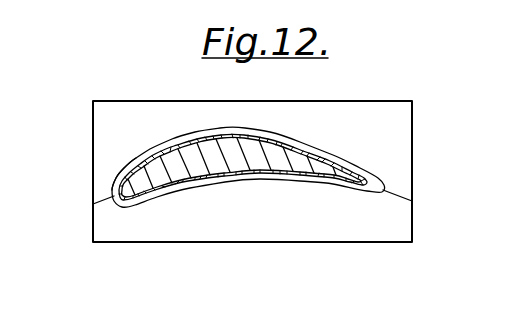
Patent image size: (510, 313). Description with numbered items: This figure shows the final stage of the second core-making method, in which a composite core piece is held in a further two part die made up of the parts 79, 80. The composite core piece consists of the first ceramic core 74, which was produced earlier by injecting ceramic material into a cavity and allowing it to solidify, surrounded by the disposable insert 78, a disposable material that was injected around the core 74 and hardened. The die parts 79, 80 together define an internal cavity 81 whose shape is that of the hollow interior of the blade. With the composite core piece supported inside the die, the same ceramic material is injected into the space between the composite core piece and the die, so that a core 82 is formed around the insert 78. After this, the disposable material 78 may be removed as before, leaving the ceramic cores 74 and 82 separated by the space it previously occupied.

The first ceramic core 74 is at (271, 158).
The disposable insert 78 is at (243, 174).
The die part 79 is at (402, 225).
The die part 80 is at (400, 151).
The internal cavity 81 is at (308, 142).
The core 82 is at (131, 166).